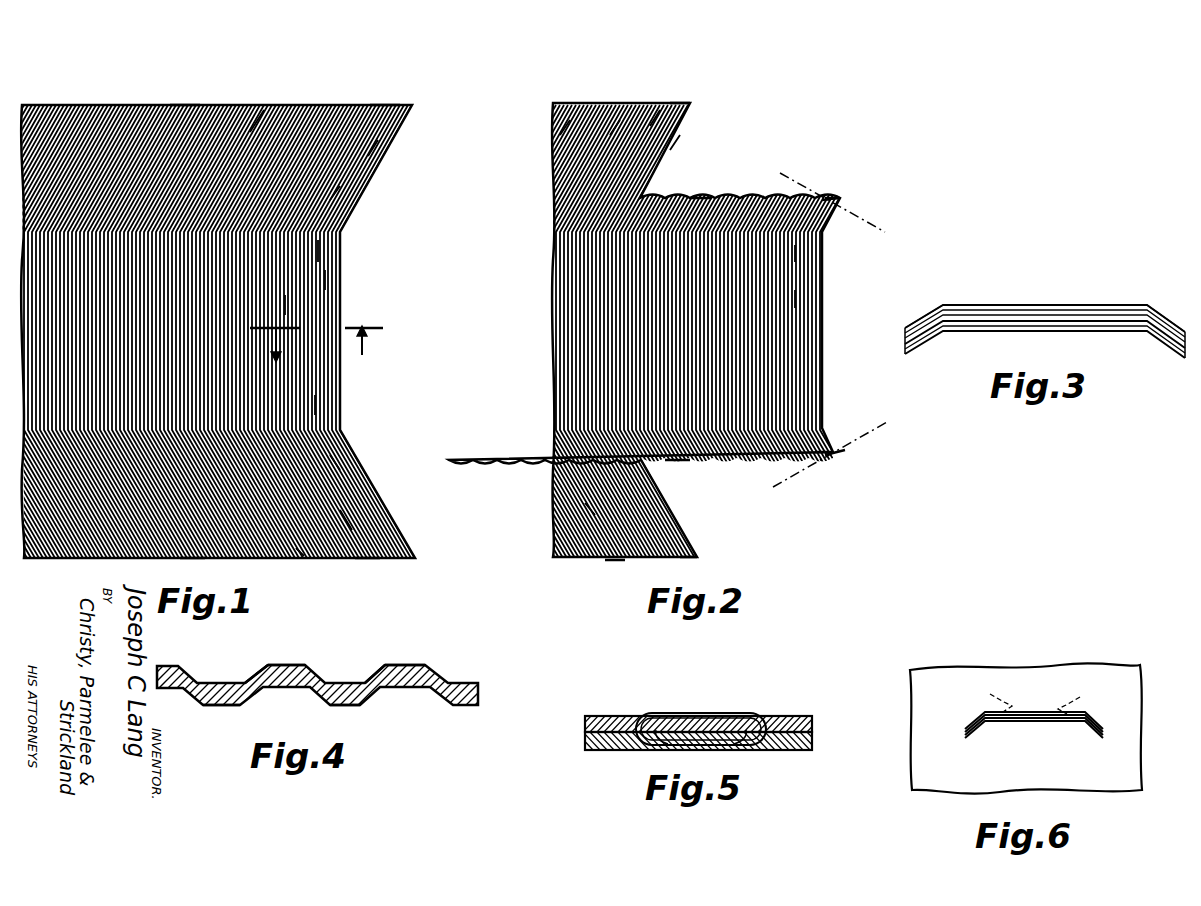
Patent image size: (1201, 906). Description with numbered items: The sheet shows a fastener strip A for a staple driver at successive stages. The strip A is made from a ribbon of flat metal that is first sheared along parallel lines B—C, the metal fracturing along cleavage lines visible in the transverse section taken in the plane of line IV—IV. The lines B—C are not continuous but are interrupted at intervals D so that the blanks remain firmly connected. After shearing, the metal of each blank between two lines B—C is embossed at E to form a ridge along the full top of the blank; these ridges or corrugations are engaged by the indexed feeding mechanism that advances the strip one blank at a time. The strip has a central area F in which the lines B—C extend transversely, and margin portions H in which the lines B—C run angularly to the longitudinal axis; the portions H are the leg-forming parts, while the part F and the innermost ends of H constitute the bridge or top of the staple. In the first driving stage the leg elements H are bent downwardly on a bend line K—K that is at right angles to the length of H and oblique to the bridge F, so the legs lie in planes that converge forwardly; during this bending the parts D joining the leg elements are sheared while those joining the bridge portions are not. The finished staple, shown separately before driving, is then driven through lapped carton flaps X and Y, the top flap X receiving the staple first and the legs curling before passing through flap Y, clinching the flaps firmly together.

In FIG. 1, the fastener strip A is at (345, 316).
In FIG. 2, the fastener strip A is at (828, 331).
In FIG. 4, the fastener strip A is at (479, 690).
In FIG. 1, the shear line B is at (183, 106).
In FIG. 2, the shear line B is at (712, 92).
In FIG. 4, the shear line B is at (224, 694).
In FIG. 1, the shear line C is at (190, 560).
In FIG. 2, the shear line C is at (826, 460).
In FIG. 4, the shear line C is at (222, 700).
In FIG. 1, the interruption D is at (256, 144).
In FIG. 2, the interruption D is at (614, 142).
In FIG. 1, the embossed ridge E is at (325, 278).
In FIG. 2, the embossed ridge E is at (700, 196).
In FIG. 4, the embossed ridge E is at (290, 665).
In FIG. 1, the central area F is at (285, 305).
In FIG. 2, the central area F is at (795, 298).
In FIG. 3, the central area F is at (1046, 305).
In FIG. 5, the central area F is at (703, 712).
In FIG. 6, the central area F is at (1034, 724).
In FIG. 1, the margin portion H is at (340, 186).
In FIG. 2, the margin portion H is at (650, 126).
In FIG. 3, the margin portion H is at (928, 310).
In FIG. 5, the margin portion H is at (652, 745).
In FIG. 6, the margin portion H is at (990, 694).
In FIG. 2, the bend line K is at (827, 332).
In FIG. 5, the top flap X is at (812, 718).
In FIG. 6, the top flap X is at (1056, 672).
In FIG. 5, the lower flap Y is at (815, 738).
In FIG. 1, the section line IV is at (316, 352).